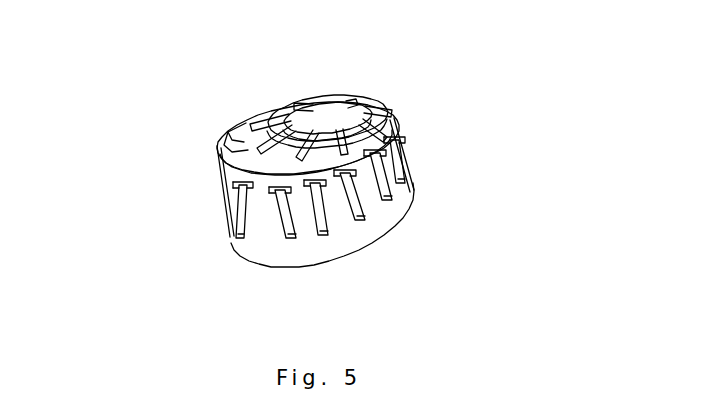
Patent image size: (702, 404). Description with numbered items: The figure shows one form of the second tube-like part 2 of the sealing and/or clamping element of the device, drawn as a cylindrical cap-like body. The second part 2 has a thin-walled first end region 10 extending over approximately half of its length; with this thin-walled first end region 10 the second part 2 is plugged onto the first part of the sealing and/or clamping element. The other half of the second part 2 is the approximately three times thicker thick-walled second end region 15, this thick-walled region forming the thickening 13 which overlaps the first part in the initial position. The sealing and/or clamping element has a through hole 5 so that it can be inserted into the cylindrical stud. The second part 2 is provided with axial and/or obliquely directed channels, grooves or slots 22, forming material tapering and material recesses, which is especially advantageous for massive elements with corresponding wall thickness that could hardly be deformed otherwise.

The second tube-like part 2 is at (367, 218).
The through hole 5 is at (345, 258).
The thin-walled first end region 10 is at (417, 187).
The thickening 13 is at (400, 118).
The thick-walled second end region 15 is at (372, 86).
The slots 22 is at (277, 217).